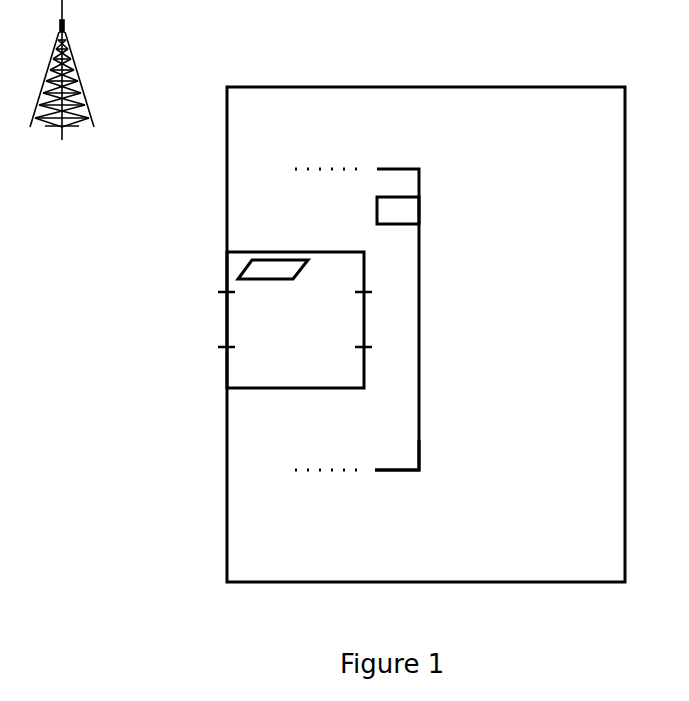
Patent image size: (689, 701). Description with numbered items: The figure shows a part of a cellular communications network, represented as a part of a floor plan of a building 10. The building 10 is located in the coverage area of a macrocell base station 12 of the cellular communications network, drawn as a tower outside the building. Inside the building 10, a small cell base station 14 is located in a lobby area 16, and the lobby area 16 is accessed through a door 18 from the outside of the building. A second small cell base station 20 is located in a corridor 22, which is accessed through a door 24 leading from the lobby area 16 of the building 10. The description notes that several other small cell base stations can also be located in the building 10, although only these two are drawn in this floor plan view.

The building 10 is at (542, 86).
The macrocell base station 12 is at (75, 57).
The small cell base station 14 is at (255, 264).
The lobby area 16 is at (272, 373).
The door 18 is at (225, 320).
The second small cell base station 20 is at (410, 213).
The corridor 22 is at (386, 444).
The door 24 is at (364, 317).